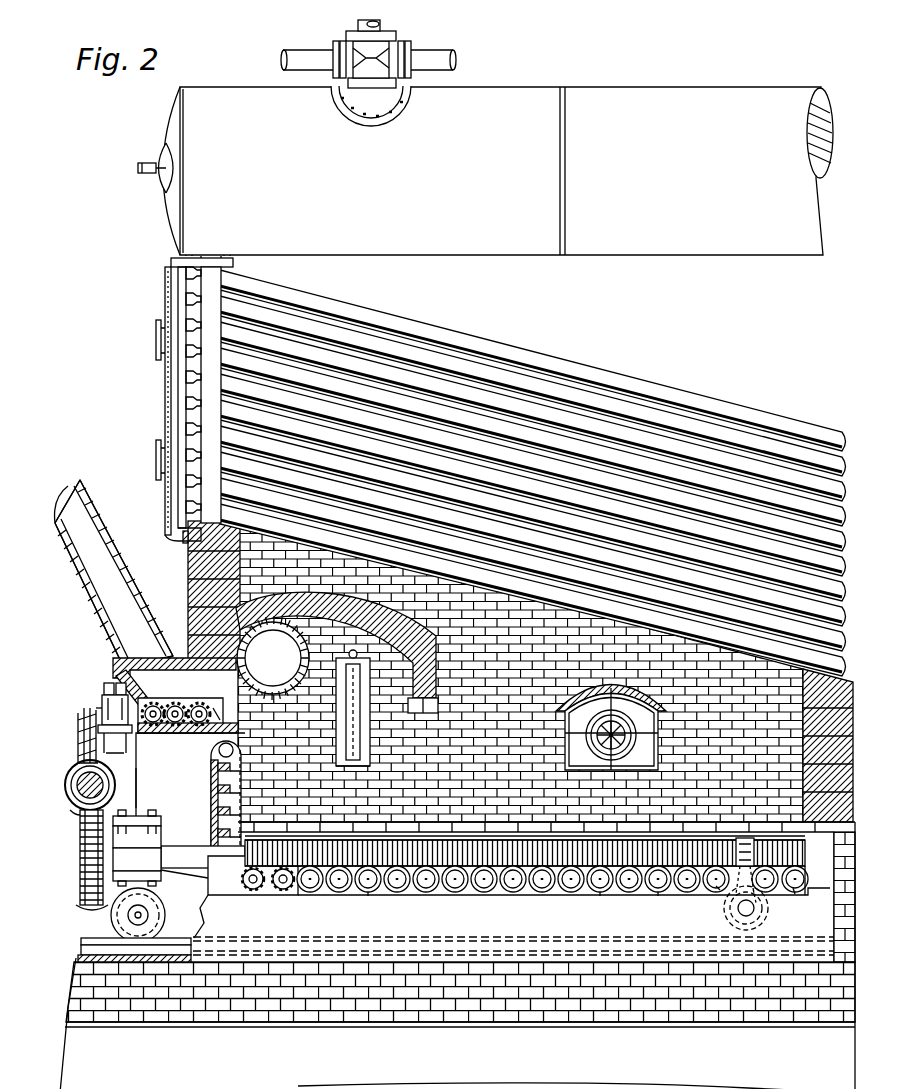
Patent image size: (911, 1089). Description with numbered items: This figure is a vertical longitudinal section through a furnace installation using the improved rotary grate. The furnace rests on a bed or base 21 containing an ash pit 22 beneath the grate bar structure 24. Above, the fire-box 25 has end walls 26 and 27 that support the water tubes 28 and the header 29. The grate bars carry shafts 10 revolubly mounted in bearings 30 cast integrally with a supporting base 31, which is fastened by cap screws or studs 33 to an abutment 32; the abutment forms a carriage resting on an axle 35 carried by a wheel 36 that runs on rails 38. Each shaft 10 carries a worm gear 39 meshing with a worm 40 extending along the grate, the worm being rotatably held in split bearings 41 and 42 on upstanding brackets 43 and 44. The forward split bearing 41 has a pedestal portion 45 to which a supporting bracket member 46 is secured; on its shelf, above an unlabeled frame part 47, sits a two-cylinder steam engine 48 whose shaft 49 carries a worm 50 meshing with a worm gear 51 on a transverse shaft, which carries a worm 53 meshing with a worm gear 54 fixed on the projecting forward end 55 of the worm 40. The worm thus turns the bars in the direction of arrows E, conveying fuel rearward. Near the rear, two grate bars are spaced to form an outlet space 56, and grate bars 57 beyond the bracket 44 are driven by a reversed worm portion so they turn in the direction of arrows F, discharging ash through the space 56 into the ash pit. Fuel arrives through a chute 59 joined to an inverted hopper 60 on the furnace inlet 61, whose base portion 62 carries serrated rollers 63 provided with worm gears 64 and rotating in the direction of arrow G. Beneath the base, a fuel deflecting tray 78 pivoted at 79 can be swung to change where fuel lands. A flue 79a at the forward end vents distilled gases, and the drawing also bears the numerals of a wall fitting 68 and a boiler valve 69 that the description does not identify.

The shaft 10 is at (330, 880).
The bed or base 21 is at (145, 1008).
The ash pit 22 is at (546, 892).
The grate bar structure 24 is at (456, 858).
The fire-box 25 is at (560, 600).
The end wall 26 is at (184, 563).
The end wall 27 is at (828, 745).
The water tubes 28 is at (552, 418).
The header 29 is at (485, 170).
The bearings 30 is at (455, 884).
The supporting base 31 is at (590, 886).
The abutment 32 is at (513, 937).
The cap screws or studs 33 is at (215, 880).
The axle 35 is at (716, 908).
The wheel 36 is at (128, 907).
The rails 38 is at (78, 941).
The worm gears 39 is at (312, 884).
The worm 40 is at (315, 856).
The split bearing 41 is at (148, 852).
The split bearing 42 is at (770, 850).
The upstanding bracket 43 is at (152, 870).
The upstanding bracket 44 is at (745, 882).
The pedestal portion 45 is at (130, 812).
The supporting bracket member 46 is at (130, 790).
The frame box 47 is at (130, 754).
The two-cylinder steam engine 48 is at (95, 682).
The engine shaft 49 is at (70, 712).
The worm 50 is at (88, 700).
The worm gear 51 is at (65, 762).
The worm 53 is at (72, 798).
The worm gear 54 is at (72, 828).
The projecting forward end 55 is at (76, 898).
The outlet space 56 is at (730, 843).
The grate bars 57 is at (794, 860).
The chute 59 is at (650, 886).
The inverted hopper 60 is at (68, 506).
The furnace inlet 61 is at (128, 668).
The base portion 62 is at (194, 387).
The serrated rollers 63 is at (192, 696).
The worm gears 64 is at (611, 728).
The gauge 68 is at (232, 706).
The valve 69 is at (368, 54).
The fuel deflecting tray 78 is at (212, 800).
The pivot 79 is at (210, 742).
The flue 79a is at (337, 652).
The arrows E is at (710, 878).
The arrows F is at (785, 882).
The arrow G is at (205, 700).